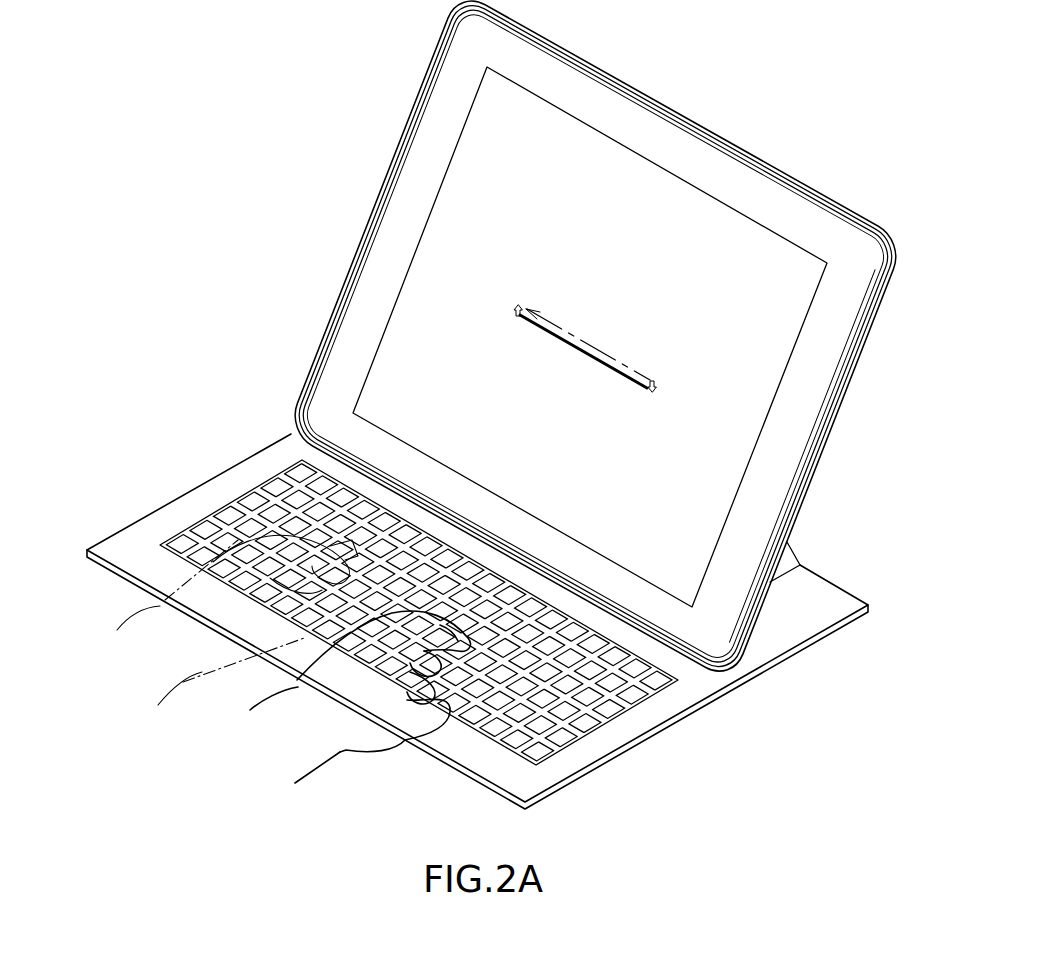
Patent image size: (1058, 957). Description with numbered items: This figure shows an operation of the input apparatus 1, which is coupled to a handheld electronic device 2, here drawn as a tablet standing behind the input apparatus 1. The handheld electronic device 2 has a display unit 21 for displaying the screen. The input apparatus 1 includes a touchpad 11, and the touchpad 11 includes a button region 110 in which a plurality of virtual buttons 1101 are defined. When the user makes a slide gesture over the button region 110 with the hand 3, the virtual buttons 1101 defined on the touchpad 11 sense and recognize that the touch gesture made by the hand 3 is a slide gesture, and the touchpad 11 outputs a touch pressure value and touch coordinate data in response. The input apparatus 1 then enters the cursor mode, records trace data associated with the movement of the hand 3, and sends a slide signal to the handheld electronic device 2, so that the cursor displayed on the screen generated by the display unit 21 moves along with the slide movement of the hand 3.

The input apparatus 1 is at (477, 606).
The touchpad 11 is at (453, 743).
The button region 110 is at (630, 710).
The virtual buttons 1101 is at (600, 753).
The handheld electronic device 2 is at (587, 341).
The display unit 21 is at (430, 297).
The hand 3 is at (332, 723).